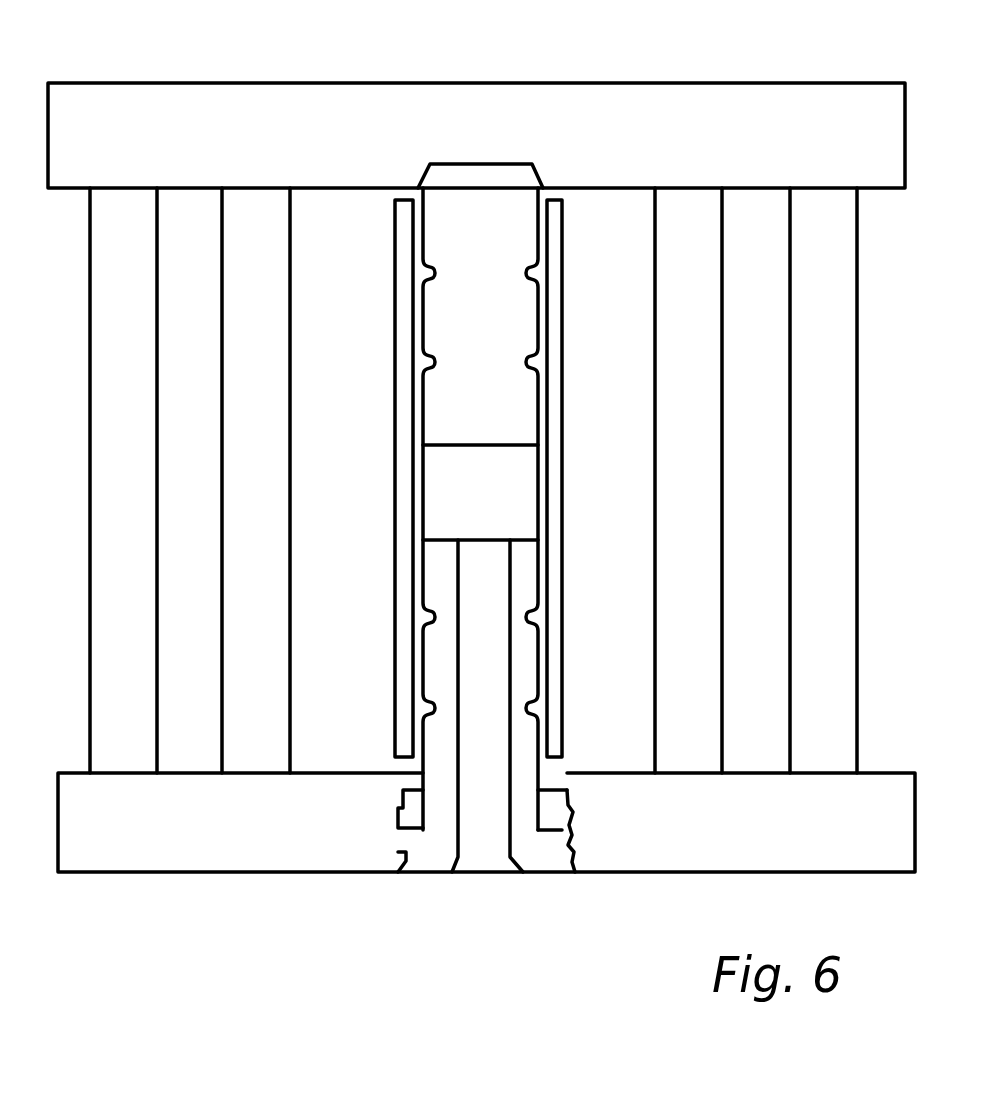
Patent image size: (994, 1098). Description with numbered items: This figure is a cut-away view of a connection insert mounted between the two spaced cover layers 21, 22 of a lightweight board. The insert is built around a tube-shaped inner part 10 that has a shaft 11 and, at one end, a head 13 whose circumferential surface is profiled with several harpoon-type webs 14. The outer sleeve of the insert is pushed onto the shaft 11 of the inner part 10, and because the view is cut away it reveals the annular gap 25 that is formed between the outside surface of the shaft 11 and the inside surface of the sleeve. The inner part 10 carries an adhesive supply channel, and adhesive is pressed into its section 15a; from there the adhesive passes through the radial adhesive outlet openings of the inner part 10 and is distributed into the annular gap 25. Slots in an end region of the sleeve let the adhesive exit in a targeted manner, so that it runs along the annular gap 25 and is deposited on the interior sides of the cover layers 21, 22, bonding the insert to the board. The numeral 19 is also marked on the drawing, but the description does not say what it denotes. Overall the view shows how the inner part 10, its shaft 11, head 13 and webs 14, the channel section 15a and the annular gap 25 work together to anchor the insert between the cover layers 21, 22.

The inner part 10 is at (412, 668).
The shaft 11 is at (478, 290).
The head 13 is at (437, 828).
The harpoon-type webs 14 is at (390, 858).
The section of the adhesive supply channel 15a is at (488, 783).
The plunger head 19 is at (418, 187).
The cover layer 21 is at (121, 873).
The cover layer 22 is at (248, 82).
The annular gap 25 is at (425, 477).